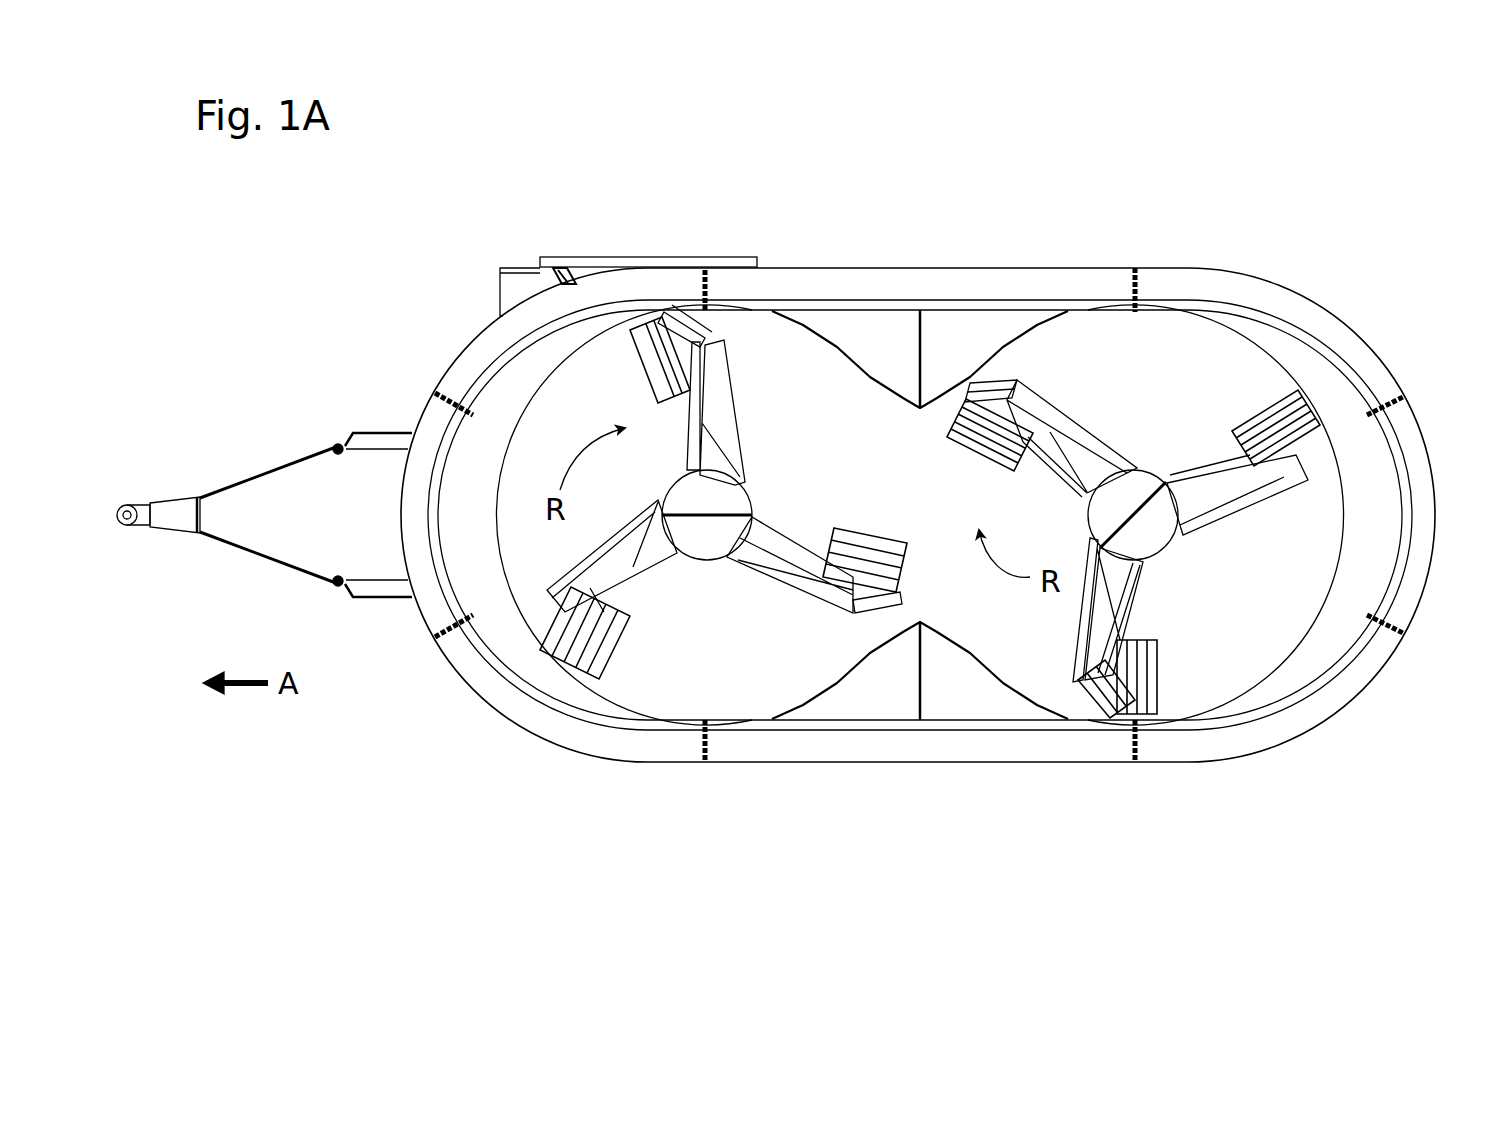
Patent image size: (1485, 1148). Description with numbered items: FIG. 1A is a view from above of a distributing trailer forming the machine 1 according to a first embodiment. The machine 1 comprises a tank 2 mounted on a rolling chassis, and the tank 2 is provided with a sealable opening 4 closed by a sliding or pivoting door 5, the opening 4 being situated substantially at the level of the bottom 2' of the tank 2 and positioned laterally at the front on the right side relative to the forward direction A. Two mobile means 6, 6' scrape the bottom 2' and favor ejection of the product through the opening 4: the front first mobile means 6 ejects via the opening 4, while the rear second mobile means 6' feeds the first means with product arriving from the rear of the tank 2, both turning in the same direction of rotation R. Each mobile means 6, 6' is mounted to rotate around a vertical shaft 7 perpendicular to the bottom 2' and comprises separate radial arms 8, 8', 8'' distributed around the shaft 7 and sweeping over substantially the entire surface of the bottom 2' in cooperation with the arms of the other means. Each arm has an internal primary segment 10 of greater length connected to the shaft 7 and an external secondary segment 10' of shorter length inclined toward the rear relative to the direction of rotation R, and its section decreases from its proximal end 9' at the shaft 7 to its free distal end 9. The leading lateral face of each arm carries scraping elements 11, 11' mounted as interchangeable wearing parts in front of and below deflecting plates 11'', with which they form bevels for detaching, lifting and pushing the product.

The machine 1 is at (705, 846).
The tank 2 is at (918, 497).
The bottom 2' is at (920, 574).
The sealable opening 4 is at (558, 170).
The door 5 is at (636, 265).
The first mobile means 6 is at (703, 461).
The second mobile means 6' is at (1238, 551).
The vertical shaft 7 is at (694, 540).
The radial arm 8 is at (932, 504).
The radial arm 8' is at (980, 650).
The radial arm 8'' is at (915, 507).
The free distal end 9 is at (1133, 332).
The proximal end 9' is at (936, 442).
The internal primary segment 10 is at (820, 445).
The external secondary segment 10' is at (893, 446).
The scraping element 11 is at (648, 625).
The scraping element 11' is at (885, 619).
The deflecting plate 11'' is at (883, 538).